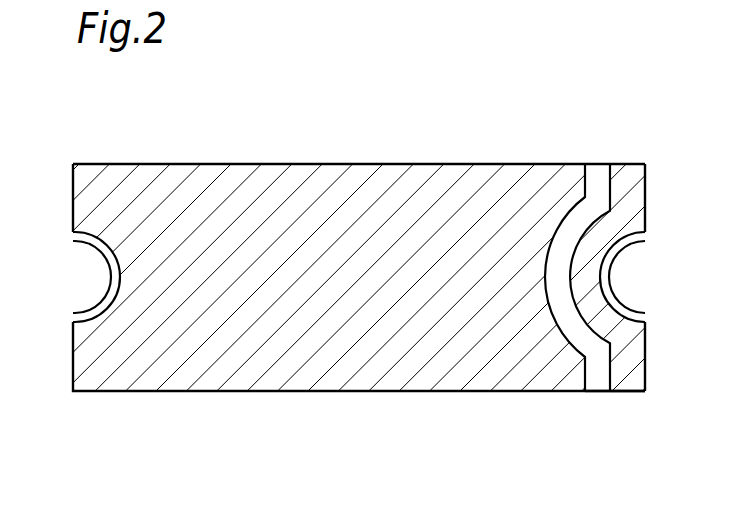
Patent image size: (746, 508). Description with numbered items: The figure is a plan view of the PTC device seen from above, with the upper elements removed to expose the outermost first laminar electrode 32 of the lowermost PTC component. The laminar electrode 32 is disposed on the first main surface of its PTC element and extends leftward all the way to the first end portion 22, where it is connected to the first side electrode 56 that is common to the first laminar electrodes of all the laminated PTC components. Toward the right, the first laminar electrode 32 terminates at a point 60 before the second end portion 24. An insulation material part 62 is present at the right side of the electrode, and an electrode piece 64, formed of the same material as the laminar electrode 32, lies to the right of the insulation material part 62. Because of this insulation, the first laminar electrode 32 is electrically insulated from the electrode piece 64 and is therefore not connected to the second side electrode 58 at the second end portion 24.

The first end portion 22 is at (373, 284).
The second end portion 24 is at (645, 395).
The first laminar electrode 32 is at (352, 182).
The first side electrode 56 is at (116, 272).
The second side electrode 58 is at (607, 277).
The point 60 is at (585, 375).
The insulation material part 62 is at (595, 182).
The electrode piece 64 is at (637, 183).